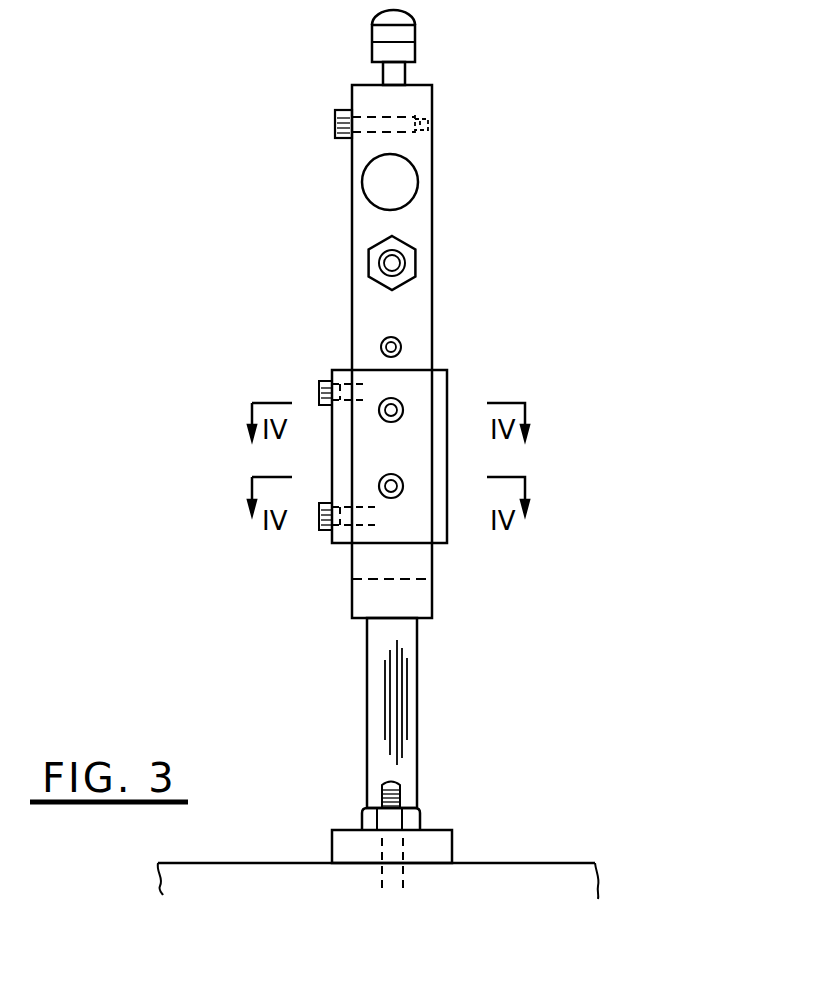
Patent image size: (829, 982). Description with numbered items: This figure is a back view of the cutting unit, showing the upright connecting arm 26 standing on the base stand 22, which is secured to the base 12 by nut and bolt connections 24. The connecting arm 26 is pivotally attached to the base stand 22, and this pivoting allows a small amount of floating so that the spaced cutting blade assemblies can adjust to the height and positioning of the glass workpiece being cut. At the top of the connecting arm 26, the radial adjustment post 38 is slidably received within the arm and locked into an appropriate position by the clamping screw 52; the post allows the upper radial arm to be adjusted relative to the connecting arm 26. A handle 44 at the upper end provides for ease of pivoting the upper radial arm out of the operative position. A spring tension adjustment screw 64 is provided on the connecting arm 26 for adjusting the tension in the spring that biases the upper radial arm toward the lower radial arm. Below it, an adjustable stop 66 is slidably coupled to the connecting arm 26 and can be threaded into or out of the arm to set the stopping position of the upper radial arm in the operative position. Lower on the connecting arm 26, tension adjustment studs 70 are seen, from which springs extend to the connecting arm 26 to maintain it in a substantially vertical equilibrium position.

The base 12 is at (277, 863).
The base stand 22 is at (448, 830).
The nut and bolt connections 24 is at (420, 816).
The connecting arm 26 is at (403, 227).
The radial adjustment post 38 is at (400, 182).
The handle 44 is at (415, 47).
The clamping screw 52 is at (343, 110).
The spring tension adjustment screw 64 is at (396, 266).
The adjustable stop 66 is at (401, 345).
The tension adjustment stud 70 is at (403, 408).